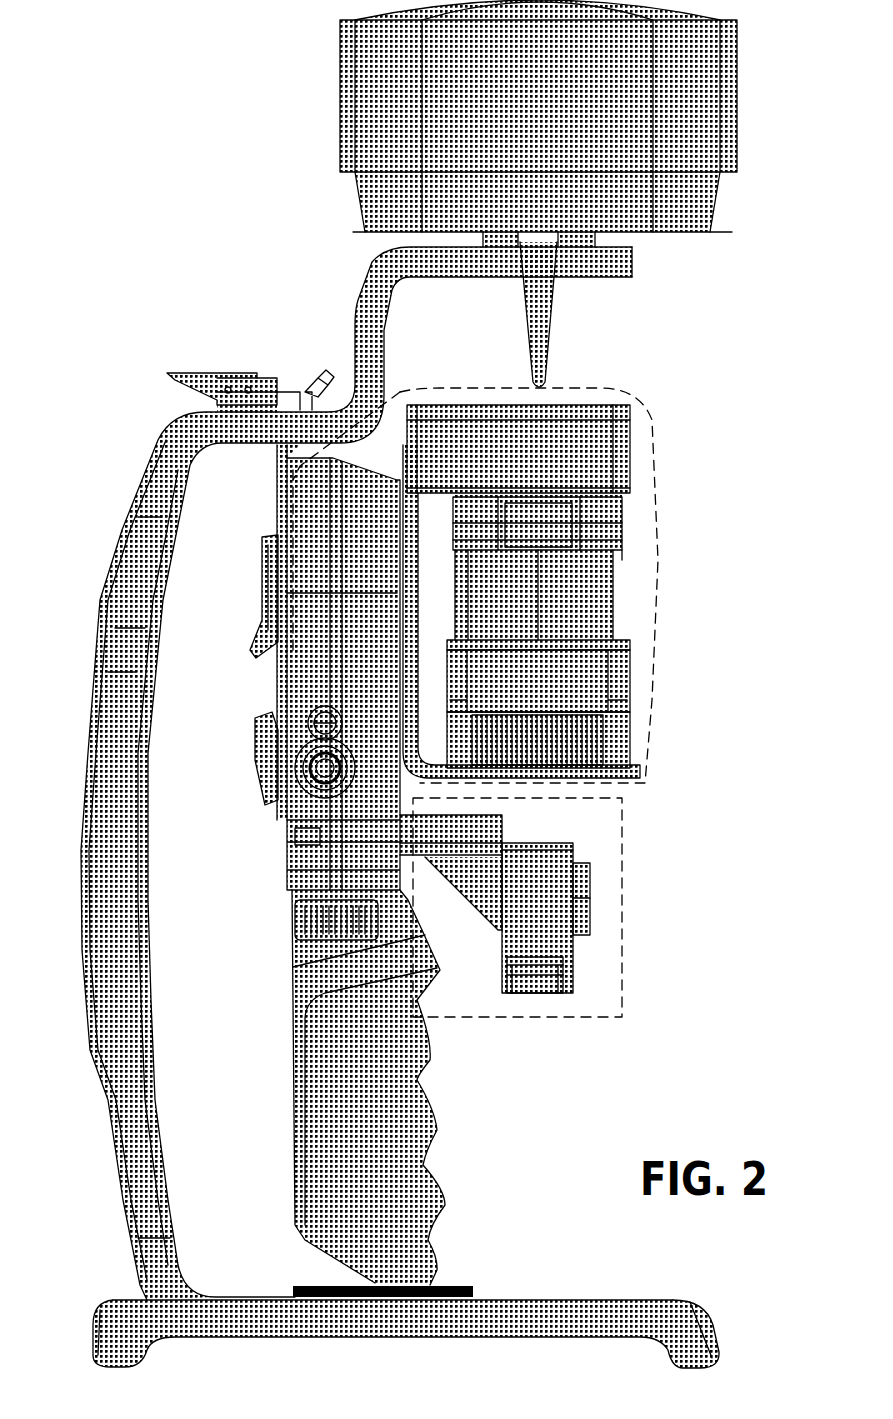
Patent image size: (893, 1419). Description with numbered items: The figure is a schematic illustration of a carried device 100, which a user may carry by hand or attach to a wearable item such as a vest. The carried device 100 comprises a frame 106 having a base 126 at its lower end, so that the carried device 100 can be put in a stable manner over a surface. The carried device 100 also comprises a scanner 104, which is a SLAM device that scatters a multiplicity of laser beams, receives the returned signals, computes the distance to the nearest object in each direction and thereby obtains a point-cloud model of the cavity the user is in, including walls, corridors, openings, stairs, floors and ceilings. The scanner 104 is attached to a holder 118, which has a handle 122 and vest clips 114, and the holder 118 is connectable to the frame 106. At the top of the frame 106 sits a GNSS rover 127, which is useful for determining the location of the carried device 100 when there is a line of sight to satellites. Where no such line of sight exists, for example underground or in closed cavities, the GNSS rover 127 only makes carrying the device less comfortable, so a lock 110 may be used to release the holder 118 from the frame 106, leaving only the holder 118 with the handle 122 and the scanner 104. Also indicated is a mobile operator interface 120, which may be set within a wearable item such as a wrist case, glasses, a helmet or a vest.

The carried device 100 is at (222, 185).
The scanner 104 is at (647, 455).
The frame 106 is at (352, 322).
The lock 110 is at (203, 372).
The vest clips 114 is at (262, 603).
The holder 118 is at (275, 690).
The mobile operator interface (MOI) 120 is at (622, 900).
The handle 122 is at (437, 1062).
The base 126 is at (567, 1303).
The GNSS rover 127 is at (338, 90).